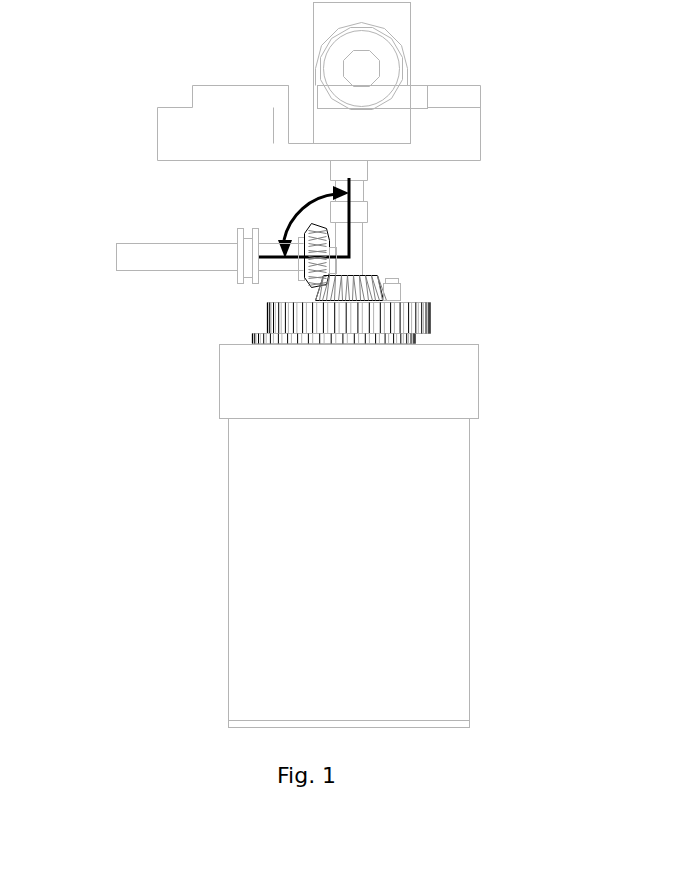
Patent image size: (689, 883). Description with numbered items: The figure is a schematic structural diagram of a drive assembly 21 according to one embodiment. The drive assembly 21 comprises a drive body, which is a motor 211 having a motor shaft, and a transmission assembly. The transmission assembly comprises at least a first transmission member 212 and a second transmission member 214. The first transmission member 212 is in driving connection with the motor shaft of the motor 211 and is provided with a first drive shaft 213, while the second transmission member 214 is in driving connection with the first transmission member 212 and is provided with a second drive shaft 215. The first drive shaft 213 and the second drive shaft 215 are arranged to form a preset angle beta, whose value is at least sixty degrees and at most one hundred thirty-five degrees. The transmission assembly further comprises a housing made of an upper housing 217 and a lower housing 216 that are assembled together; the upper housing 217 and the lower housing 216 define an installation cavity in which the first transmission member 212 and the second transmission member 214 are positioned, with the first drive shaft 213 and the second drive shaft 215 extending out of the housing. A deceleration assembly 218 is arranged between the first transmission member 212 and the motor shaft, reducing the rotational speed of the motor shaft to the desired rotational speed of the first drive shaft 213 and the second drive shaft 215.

The drive assembly 21 is at (165, 35).
The motor 211 is at (417, 553).
The first transmission member 212 is at (362, 285).
The first drive shaft 213 is at (348, 247).
The second transmission member 214 is at (302, 260).
The second drive shaft 215 is at (167, 248).
The lower housing 216 is at (455, 400).
The upper housing 217 is at (420, 95).
The deceleration assembly 218 is at (373, 323).